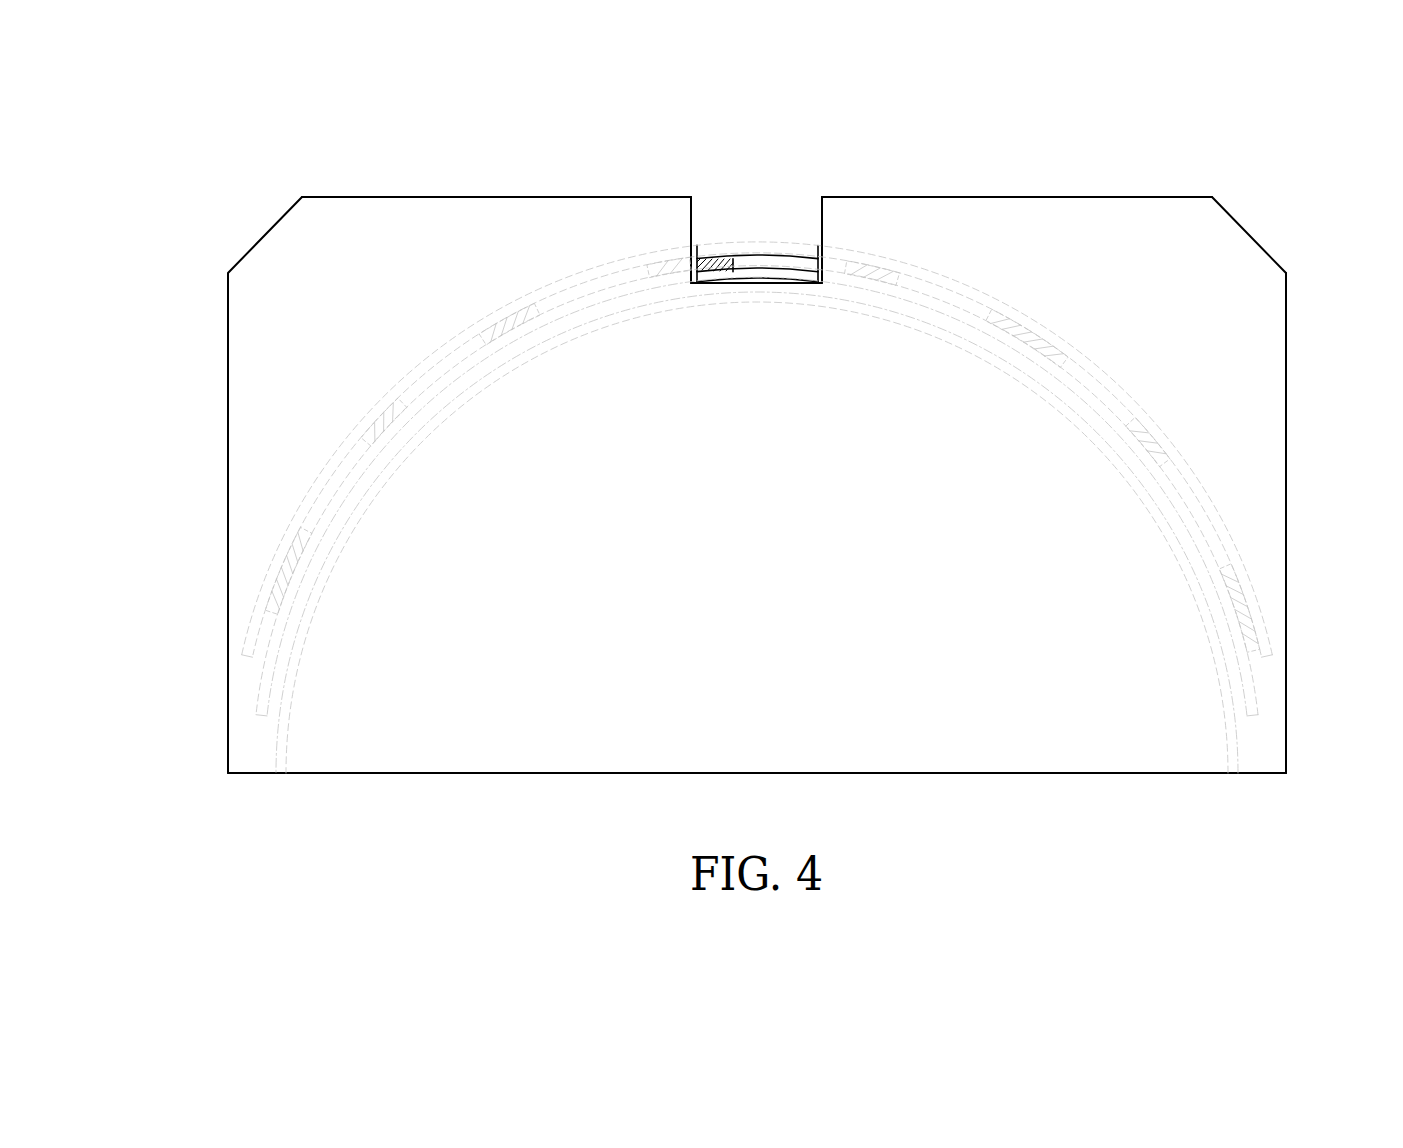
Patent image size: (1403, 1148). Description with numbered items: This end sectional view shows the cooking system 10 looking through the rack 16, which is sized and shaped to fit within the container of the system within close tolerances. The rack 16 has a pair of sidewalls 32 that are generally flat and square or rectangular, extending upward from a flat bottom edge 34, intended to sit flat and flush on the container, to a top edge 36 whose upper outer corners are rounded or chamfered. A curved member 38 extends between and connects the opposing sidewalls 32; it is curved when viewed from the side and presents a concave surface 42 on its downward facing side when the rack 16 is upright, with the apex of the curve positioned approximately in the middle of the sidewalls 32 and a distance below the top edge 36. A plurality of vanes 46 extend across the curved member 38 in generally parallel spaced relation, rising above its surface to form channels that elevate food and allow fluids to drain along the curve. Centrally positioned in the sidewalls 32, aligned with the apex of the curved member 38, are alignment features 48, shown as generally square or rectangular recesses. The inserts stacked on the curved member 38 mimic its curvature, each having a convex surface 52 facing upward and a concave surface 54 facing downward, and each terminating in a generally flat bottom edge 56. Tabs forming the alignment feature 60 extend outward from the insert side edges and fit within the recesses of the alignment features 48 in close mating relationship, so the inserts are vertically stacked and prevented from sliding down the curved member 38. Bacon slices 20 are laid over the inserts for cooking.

The cooking system 10 is at (1296, 171).
The rack 16 is at (1262, 366).
The bacon slices 20 is at (667, 253).
The sidewalls 32 is at (1183, 281).
The bottom edge 34 is at (530, 773).
The top edge 36 is at (443, 197).
The curved member 38 is at (485, 391).
The concave surface 42 is at (1098, 458).
The vanes 46 is at (1185, 540).
The alignment features 48 is at (822, 212).
The convex surface 52 is at (1108, 385).
The concave surface 54 is at (1090, 356).
The bottom edge 56 is at (262, 723).
The alignment feature 60 is at (738, 245).